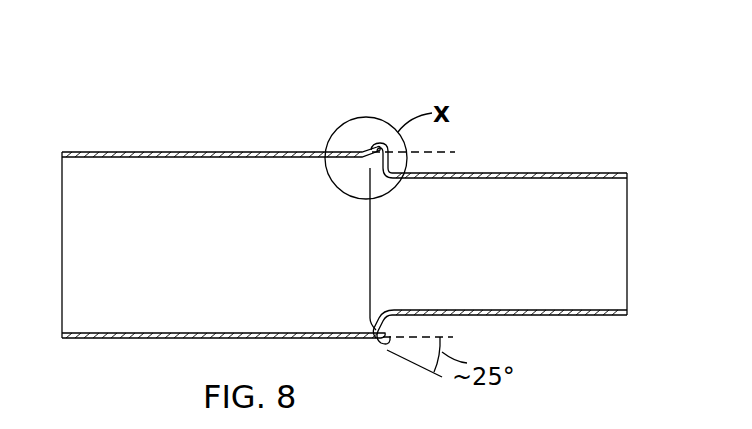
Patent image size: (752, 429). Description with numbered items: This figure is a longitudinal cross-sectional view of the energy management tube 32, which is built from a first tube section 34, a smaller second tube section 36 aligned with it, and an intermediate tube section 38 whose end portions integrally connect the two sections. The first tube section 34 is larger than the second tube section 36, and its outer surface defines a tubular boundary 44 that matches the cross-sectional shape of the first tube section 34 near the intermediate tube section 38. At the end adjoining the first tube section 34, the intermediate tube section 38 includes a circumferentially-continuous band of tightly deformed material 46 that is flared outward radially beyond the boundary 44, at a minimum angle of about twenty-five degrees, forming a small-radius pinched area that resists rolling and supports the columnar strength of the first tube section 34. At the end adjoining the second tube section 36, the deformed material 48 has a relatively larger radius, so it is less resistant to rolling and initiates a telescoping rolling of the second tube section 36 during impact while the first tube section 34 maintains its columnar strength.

The energy management tube 32 is at (520, 86).
The first tube section 34 is at (157, 151).
The second tube section 36 is at (528, 172).
The intermediate tube section 38 is at (386, 331).
The tubular boundary 44 is at (452, 151).
The tightly deformed material 46 is at (390, 150).
The deformed material 48 is at (365, 168).